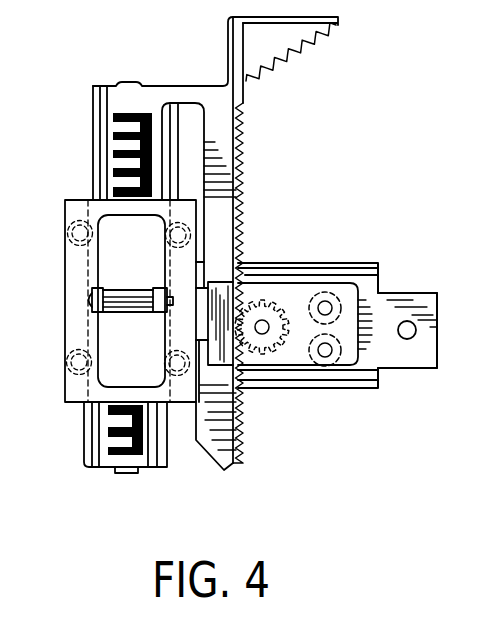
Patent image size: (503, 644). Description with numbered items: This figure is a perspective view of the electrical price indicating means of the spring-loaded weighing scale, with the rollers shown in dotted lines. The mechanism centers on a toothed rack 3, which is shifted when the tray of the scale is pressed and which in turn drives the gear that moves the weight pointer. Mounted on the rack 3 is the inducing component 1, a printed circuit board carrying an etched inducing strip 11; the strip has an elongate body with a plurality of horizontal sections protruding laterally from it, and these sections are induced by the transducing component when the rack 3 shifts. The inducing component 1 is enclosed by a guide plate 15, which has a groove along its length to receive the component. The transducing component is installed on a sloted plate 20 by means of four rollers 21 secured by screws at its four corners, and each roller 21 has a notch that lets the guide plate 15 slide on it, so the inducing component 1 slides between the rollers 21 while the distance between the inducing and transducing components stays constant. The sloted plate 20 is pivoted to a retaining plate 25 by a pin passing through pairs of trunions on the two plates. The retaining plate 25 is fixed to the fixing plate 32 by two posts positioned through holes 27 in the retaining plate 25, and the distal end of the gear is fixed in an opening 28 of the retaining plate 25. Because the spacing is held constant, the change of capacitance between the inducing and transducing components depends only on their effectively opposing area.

The inducing component 1 is at (120, 86).
The guide plate 15 is at (96, 108).
The inducing strip 11 is at (113, 135).
The rack 3 is at (246, 121).
The sloted plate 20 is at (70, 392).
The roller 21 is at (68, 362).
The retaining plate 25 is at (345, 365).
The holes 27 is at (327, 303).
The opening 28 is at (262, 334).
The fixing plate 32 is at (425, 368).